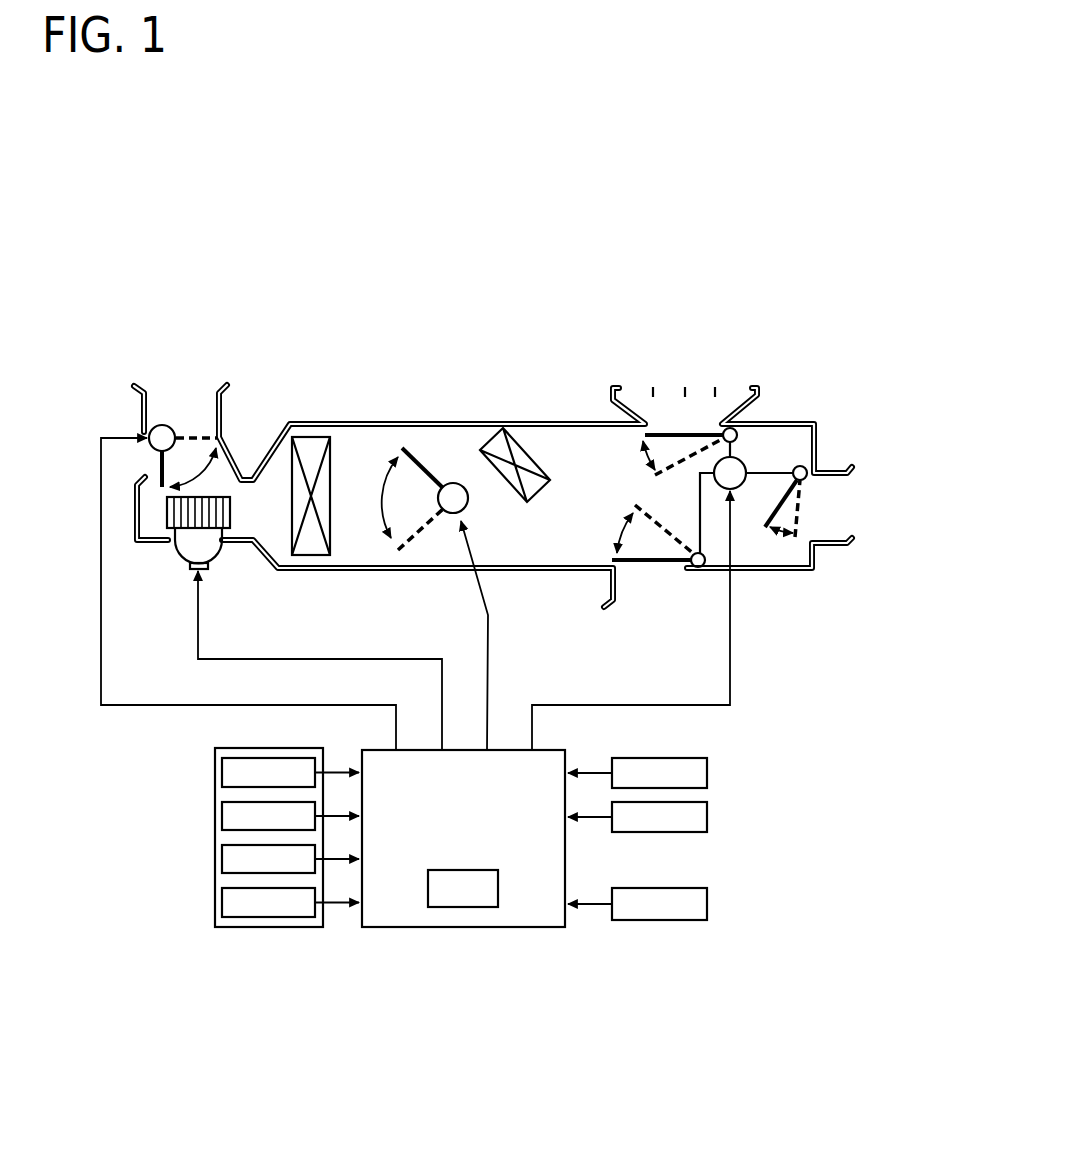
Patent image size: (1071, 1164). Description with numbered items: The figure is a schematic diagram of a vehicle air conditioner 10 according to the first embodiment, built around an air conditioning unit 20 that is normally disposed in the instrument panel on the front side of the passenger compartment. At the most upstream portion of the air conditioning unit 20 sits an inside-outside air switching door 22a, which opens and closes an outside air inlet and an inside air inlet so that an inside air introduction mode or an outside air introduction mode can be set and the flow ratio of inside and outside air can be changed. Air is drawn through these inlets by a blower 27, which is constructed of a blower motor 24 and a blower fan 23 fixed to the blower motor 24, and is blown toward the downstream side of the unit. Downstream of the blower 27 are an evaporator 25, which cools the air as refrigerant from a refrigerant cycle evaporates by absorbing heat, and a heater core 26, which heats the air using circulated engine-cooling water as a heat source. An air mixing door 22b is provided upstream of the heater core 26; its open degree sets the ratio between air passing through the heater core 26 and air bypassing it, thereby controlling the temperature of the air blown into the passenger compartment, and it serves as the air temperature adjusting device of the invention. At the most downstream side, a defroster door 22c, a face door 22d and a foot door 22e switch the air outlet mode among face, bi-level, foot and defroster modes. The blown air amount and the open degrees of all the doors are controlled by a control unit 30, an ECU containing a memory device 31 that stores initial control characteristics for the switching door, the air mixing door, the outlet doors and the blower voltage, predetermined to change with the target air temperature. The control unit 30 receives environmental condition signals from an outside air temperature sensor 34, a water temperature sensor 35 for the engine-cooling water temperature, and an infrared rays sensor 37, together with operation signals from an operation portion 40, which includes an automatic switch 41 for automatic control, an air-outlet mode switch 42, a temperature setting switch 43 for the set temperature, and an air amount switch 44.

The vehicle air conditioner 10 is at (623, 281).
The air conditioning unit 20 is at (485, 413).
The inside-outside air switching door 22a is at (166, 466).
The air mixing door 22b is at (422, 463).
The defroster door 22c is at (690, 433).
The face door 22d is at (780, 516).
The foot door 22e is at (655, 568).
The blower fan 23 is at (180, 513).
The blower motor 24 is at (192, 550).
The evaporator 25 is at (310, 450).
The heater core 26 is at (525, 457).
The blower 27 is at (175, 588).
The control unit 30 is at (463, 881).
The memory device 31 is at (463, 897).
The outside air temperature sensor 34 is at (707, 773).
The water temperature sensor 35 is at (707, 817).
The infrared rays sensor 37 is at (707, 904).
The operation portion 40 is at (249, 880).
The automatic switch 41 is at (222, 773).
The air-outlet mode switch 42 is at (222, 816).
The temperature setting switch 43 is at (222, 859).
The air amount switch 44 is at (222, 902).